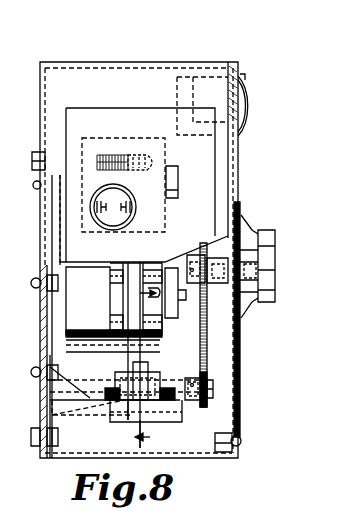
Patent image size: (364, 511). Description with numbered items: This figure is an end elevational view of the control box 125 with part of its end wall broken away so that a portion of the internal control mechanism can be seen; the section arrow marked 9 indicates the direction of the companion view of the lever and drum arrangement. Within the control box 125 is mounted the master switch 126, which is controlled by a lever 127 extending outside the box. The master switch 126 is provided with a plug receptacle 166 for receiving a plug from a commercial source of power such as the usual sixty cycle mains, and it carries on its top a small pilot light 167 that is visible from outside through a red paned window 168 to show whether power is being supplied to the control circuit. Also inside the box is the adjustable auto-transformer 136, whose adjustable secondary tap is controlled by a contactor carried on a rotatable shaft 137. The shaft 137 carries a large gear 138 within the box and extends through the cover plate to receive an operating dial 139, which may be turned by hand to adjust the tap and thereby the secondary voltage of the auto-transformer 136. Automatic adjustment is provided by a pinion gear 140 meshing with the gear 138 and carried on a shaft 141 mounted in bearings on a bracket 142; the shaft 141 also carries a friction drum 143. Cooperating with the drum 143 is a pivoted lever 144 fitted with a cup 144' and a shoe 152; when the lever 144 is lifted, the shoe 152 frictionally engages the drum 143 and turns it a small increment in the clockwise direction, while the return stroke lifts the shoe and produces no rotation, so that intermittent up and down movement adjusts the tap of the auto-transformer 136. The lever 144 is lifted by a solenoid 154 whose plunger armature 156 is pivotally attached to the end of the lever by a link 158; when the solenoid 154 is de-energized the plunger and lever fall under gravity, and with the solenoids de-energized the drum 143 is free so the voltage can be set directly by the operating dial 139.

The control box 125 is at (228, 56).
The master switch 126 is at (200, 153).
The lever 127 is at (172, 166).
The adjustable auto-transformer 136 is at (255, 319).
The rotatable shaft 137 is at (182, 290).
The large gear 138 is at (207, 307).
The operating dial 139 is at (266, 230).
The pinion gear 140 is at (205, 375).
The shaft 141 is at (208, 400).
The bracket 142 is at (78, 413).
The friction drum 143 is at (172, 422).
The pivoted lever 144 is at (121, 424).
The cup 144' is at (160, 355).
The shoe 152 is at (152, 368).
The solenoid 154 is at (118, 298).
The plunger armature 156 is at (125, 349).
The link 158 is at (123, 385).
The plug receptacle 166 is at (115, 220).
The pilot light 167 is at (126, 152).
The red paned window 168 is at (99, 156).
The section arrow 9 is at (150, 437).